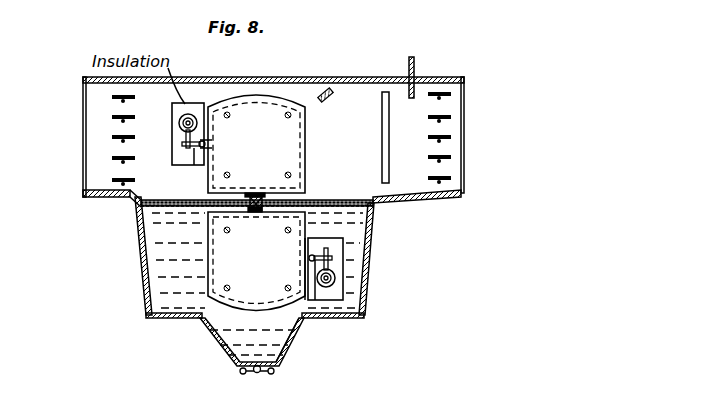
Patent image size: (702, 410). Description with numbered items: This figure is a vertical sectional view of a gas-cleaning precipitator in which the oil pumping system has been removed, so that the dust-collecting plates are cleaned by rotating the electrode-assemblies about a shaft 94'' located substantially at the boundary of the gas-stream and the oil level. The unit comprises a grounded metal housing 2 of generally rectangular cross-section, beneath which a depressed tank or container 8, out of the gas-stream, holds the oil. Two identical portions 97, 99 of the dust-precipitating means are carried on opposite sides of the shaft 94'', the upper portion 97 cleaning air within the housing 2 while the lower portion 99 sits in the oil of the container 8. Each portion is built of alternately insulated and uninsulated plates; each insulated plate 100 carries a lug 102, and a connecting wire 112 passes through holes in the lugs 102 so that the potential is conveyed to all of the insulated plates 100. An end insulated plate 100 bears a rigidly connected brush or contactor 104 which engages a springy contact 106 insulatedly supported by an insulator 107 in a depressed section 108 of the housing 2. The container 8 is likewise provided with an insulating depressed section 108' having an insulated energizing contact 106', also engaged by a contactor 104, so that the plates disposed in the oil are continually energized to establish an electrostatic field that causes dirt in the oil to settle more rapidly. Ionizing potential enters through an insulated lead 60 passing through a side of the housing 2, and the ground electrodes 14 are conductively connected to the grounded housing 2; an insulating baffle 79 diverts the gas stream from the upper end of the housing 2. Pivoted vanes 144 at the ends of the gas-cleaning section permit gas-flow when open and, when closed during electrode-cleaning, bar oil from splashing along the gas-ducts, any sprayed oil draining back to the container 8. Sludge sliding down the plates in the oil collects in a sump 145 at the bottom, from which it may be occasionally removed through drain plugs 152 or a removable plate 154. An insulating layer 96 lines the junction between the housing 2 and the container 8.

The housing 2 is at (208, 78).
The container 8 is at (138, 265).
The ground electrodes 14 is at (389, 110).
The insulated lead 60 is at (414, 68).
The insulating baffle 79 is at (334, 92).
The shaft 94'' is at (252, 219).
The insulation layer 96 is at (333, 199).
The portion of dust-precipitating means 97 is at (262, 104).
The portion of dust-precipitating means 99 is at (205, 363).
The insulated plate 100 is at (303, 133).
The lug 102 is at (205, 147).
The contactor 104 is at (184, 146).
The springy contact 106 is at (164, 135).
The insulated energizing contact 106' is at (362, 262).
The insulator 107 is at (190, 113).
The depressed section 108 is at (171, 133).
The insulating depressed section 108' is at (360, 272).
The connecting wire 112 is at (194, 152).
The pivoted vanes 144 is at (112, 136).
The sump 145 is at (290, 352).
The drain plugs 152 is at (258, 373).
The removable plate 154 is at (247, 374).